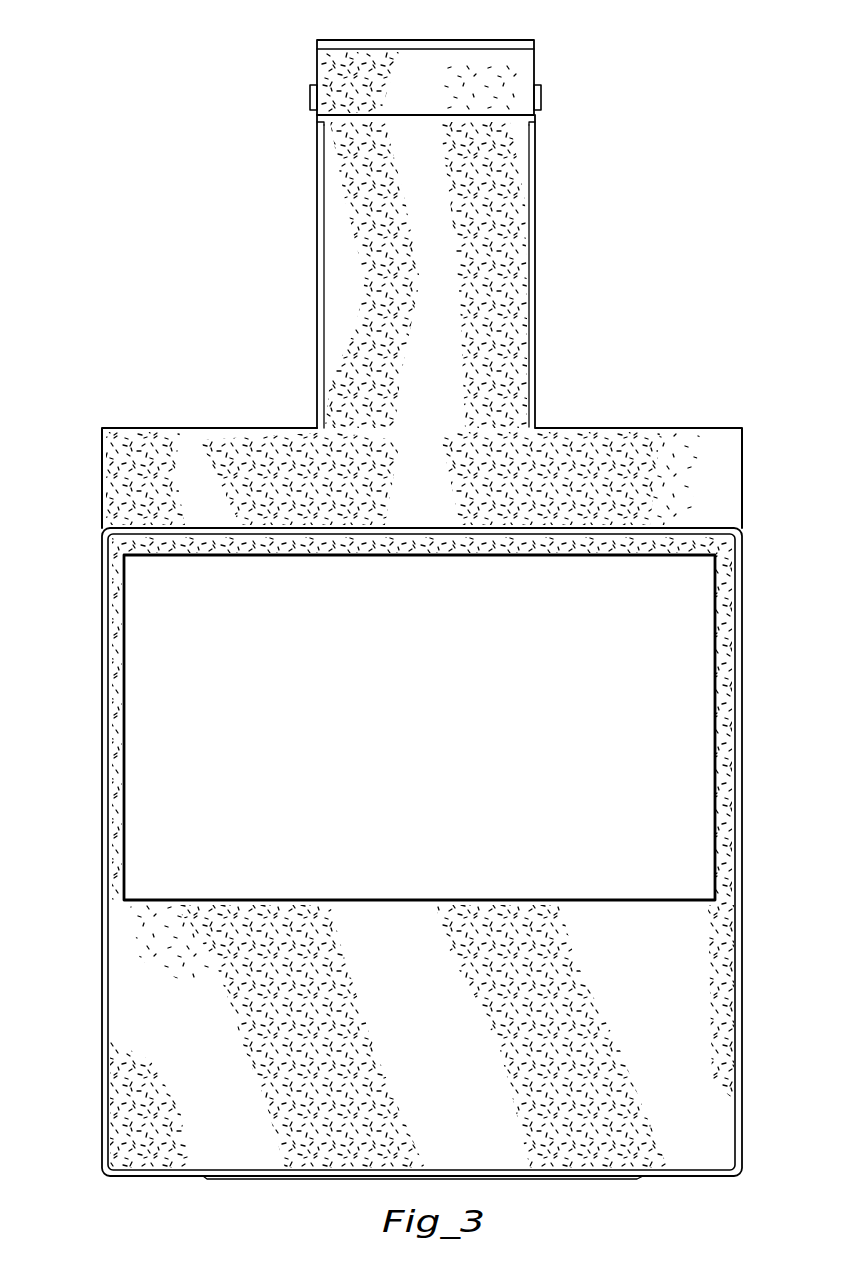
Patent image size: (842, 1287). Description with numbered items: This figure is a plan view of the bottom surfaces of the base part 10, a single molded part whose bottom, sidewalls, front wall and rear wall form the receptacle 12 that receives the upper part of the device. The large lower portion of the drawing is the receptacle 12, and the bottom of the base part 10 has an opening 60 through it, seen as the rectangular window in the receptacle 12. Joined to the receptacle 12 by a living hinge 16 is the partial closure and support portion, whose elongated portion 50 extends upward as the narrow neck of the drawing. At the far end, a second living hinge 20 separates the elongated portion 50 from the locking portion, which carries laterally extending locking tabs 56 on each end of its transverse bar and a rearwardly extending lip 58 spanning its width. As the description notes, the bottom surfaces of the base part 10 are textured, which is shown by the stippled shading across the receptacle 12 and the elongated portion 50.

The base part 10 is at (100, 1153).
The receptacle 12 is at (421, 1067).
The living hinge 16 is at (249, 530).
The living hinge 20 is at (508, 117).
The elongated portion 50 is at (515, 379).
The locking tabs 56 is at (309, 97).
The rearwardly extending lip 58 is at (317, 42).
The opening 60 is at (202, 899).